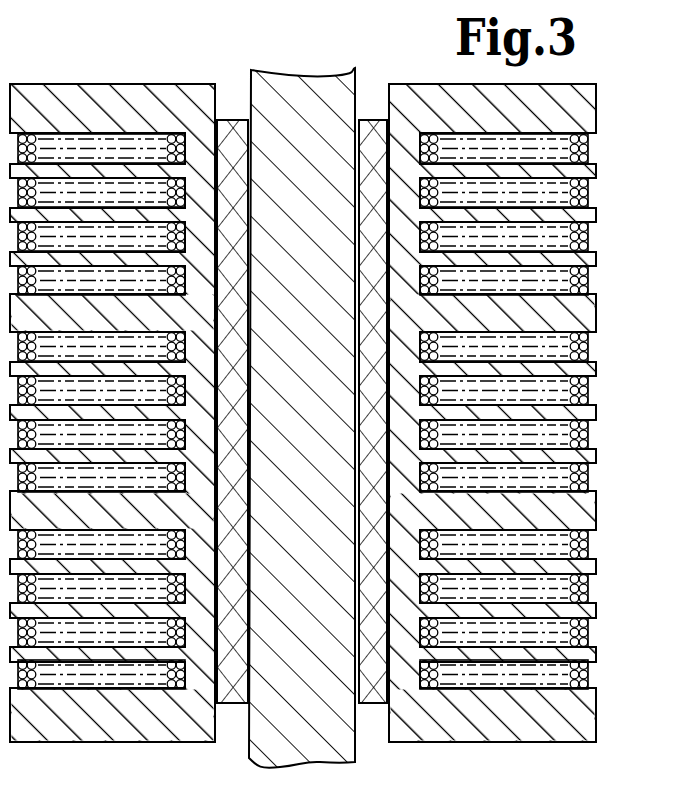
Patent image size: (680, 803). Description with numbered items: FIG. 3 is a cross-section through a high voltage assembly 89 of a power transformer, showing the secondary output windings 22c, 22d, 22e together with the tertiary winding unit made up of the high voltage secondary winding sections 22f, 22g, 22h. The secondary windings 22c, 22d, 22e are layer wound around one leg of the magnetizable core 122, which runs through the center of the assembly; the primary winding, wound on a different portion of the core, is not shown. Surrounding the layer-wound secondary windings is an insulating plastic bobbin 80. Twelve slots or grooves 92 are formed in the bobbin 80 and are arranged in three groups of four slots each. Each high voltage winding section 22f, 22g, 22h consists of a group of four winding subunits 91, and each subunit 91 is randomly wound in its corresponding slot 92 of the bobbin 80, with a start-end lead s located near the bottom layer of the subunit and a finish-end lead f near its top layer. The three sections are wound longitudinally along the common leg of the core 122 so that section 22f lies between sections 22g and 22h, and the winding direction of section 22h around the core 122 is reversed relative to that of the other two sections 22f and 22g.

The insulating plastic bobbin 80 is at (163, 88).
The slot 92 is at (70, 143).
The secondary output winding 22c is at (226, 120).
The secondary output winding 22d is at (232, 411).
The secondary output winding 22e is at (373, 411).
The high voltage assembly 89 is at (316, 61).
The magnetizable core 122 is at (355, 82).
The slot s is at (428, 140).
The coil end face f is at (589, 145).
The winding subunit 91 is at (589, 283).
The high voltage secondary winding section 22h is at (675, 229).
The high voltage secondary winding section 22f is at (672, 424).
The high voltage secondary winding section 22g is at (668, 627).